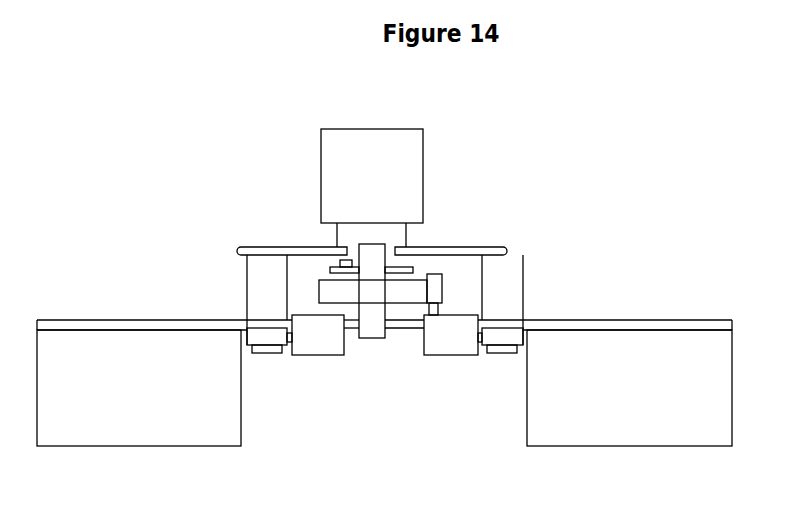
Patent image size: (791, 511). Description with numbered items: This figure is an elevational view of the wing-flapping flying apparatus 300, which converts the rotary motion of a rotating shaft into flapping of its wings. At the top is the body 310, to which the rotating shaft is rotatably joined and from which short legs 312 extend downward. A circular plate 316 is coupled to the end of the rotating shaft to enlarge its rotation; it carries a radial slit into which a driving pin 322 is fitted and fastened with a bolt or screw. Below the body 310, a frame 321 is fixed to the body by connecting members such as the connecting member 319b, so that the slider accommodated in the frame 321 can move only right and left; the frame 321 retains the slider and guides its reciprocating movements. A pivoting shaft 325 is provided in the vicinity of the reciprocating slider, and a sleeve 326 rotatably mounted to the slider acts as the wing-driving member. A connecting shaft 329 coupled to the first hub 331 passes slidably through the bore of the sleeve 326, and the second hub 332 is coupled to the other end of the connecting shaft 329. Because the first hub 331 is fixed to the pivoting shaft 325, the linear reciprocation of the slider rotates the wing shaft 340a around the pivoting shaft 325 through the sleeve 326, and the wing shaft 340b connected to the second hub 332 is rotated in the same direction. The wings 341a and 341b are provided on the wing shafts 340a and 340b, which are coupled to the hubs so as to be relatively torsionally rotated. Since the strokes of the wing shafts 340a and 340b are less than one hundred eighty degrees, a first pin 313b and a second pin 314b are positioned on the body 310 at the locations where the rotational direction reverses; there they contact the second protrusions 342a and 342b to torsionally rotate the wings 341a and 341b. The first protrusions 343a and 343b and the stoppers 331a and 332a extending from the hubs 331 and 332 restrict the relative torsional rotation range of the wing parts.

The wing-flapping flying apparatus 300 is at (665, 100).
The body 310 is at (367, 137).
The motor mounting legs 312 is at (404, 233).
The first pin 313b is at (483, 247).
The second pin 314b is at (289, 247).
The circular plate 316 is at (415, 270).
The connecting member 319b is at (373, 250).
The frame 321 is at (325, 290).
The driving pin 322 is at (338, 278).
The pivoting shaft 325 is at (437, 308).
The sleeve 326 is at (373, 332).
The connecting shaft 329 is at (403, 325).
The first hub 331 is at (450, 347).
The stopper 331a is at (491, 348).
The second hub 332 is at (323, 348).
The stopper 332a is at (263, 350).
The wing shaft 340a is at (647, 327).
The wing shaft 340b is at (88, 327).
The wing 341a is at (647, 435).
The wing 341b is at (98, 433).
The second protrusion 342a is at (510, 275).
The second protrusion 342b is at (258, 270).
The first protrusion 343a is at (505, 340).
The first protrusion 343b is at (279, 342).